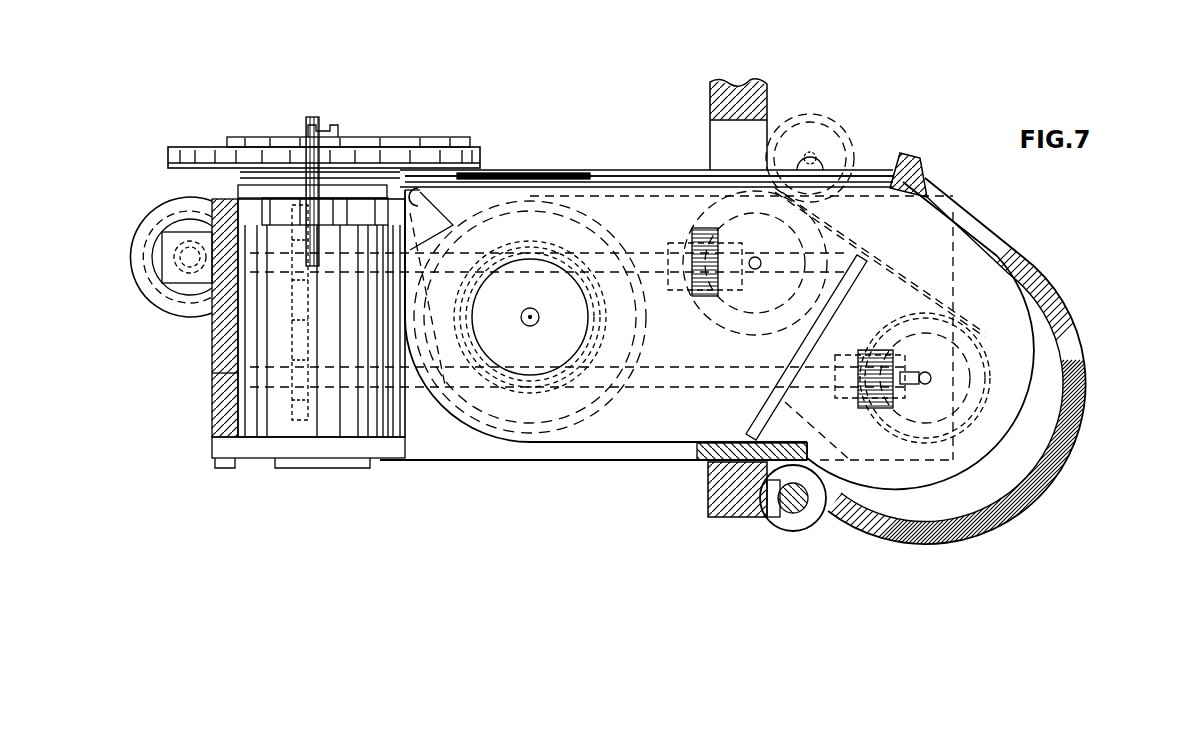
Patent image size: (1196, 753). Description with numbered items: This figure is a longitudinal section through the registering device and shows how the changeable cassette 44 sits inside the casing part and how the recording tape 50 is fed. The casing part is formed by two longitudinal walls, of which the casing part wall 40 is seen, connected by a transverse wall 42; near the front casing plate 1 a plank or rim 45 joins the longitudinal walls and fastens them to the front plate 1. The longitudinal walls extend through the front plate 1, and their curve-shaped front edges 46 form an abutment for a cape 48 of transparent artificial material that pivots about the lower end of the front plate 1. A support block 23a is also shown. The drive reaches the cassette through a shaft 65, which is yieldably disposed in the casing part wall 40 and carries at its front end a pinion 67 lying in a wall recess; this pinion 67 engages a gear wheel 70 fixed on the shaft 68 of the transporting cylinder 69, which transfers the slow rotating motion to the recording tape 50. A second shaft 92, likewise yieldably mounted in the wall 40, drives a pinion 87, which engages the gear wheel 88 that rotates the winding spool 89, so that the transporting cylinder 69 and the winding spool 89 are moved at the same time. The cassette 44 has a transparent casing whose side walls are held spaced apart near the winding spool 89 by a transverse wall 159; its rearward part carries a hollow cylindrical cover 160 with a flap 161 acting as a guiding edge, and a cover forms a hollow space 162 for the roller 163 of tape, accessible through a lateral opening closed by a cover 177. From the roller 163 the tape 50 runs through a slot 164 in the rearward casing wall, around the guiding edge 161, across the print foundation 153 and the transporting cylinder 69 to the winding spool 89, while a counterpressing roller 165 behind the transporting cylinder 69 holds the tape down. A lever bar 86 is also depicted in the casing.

The front casing plate 1 is at (708, 490).
The support block 23a is at (743, 170).
The longitudinal wall 40 is at (445, 445).
The transverse wall 42 is at (212, 383).
The changeable cassette 44 is at (687, 350).
The rim 45 is at (712, 447).
The curve-shaped front edge 46 is at (930, 197).
The cape 48 is at (1073, 438).
The recording tape 50 is at (903, 280).
The shaft 65 is at (620, 235).
The pinion 67 is at (710, 180).
The shaft of the transporting cylinder 68 is at (755, 270).
The transporting cylinder 69 is at (785, 247).
The gear wheel 70 is at (703, 218).
The lever bar 86 is at (716, 393).
The pinion 87 is at (885, 420).
The gear wheel 88 is at (1003, 380).
The winding spool 89 is at (960, 357).
The shaft 92 is at (413, 273).
The print foundation 153 is at (533, 172).
The transverse wall 159 is at (950, 537).
The hollow cylindrical cover 160 is at (600, 212).
The flap 161 is at (412, 190).
The hollow space 162 is at (533, 425).
The roller 163 is at (553, 430).
The slot 164 is at (453, 225).
The counterpressing roller 165 is at (842, 140).
The cover 177 is at (570, 213).